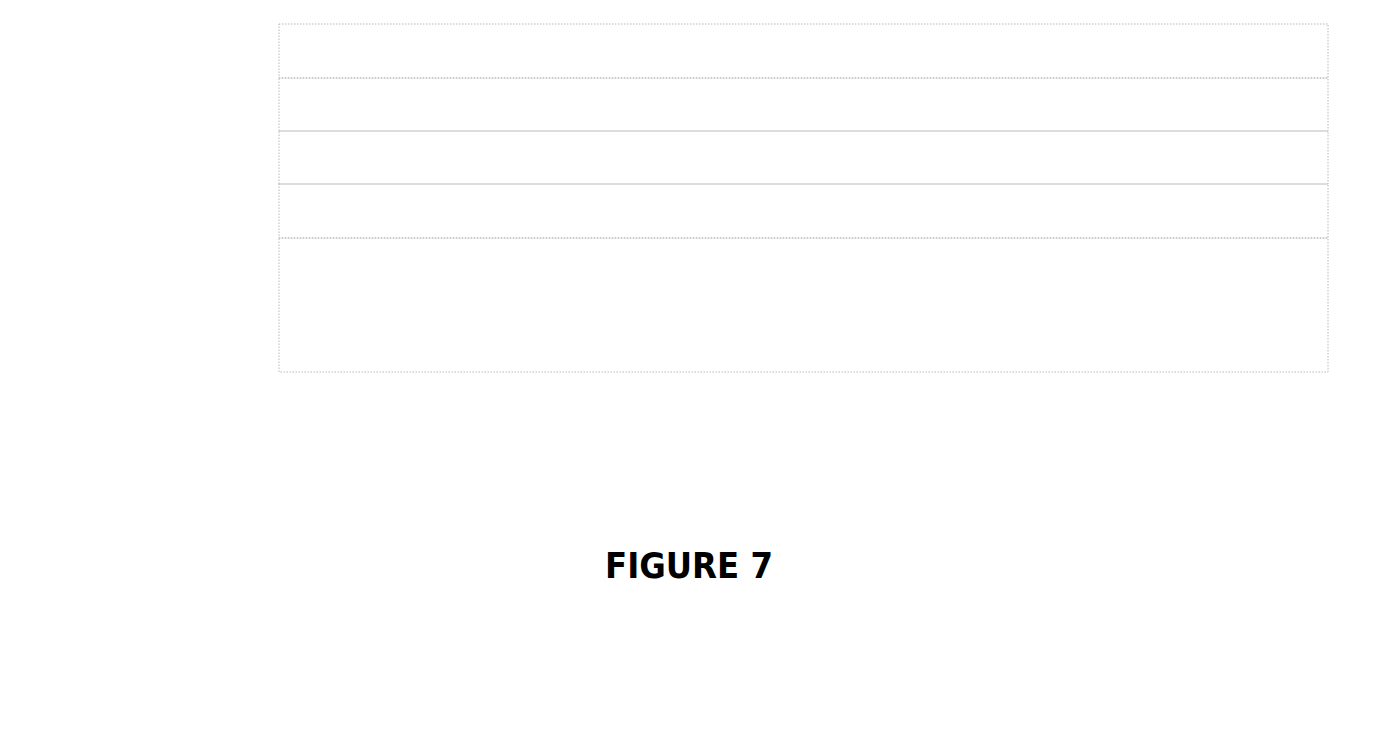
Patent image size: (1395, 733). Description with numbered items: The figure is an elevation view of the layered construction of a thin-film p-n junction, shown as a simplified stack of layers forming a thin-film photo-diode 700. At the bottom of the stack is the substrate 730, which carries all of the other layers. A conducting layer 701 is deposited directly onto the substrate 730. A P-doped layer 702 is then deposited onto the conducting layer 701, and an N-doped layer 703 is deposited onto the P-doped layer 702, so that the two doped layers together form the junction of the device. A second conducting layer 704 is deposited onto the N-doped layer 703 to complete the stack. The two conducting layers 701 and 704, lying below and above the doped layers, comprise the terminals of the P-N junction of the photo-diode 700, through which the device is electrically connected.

The thin-film photo-diode 700 is at (718, 274).
The conducting layer 704 is at (253, 42).
The N-doped layer 703 is at (253, 95).
The P-doped layer 702 is at (253, 148).
The conducting layer 701 is at (253, 202).
The substrate 730 is at (253, 295).